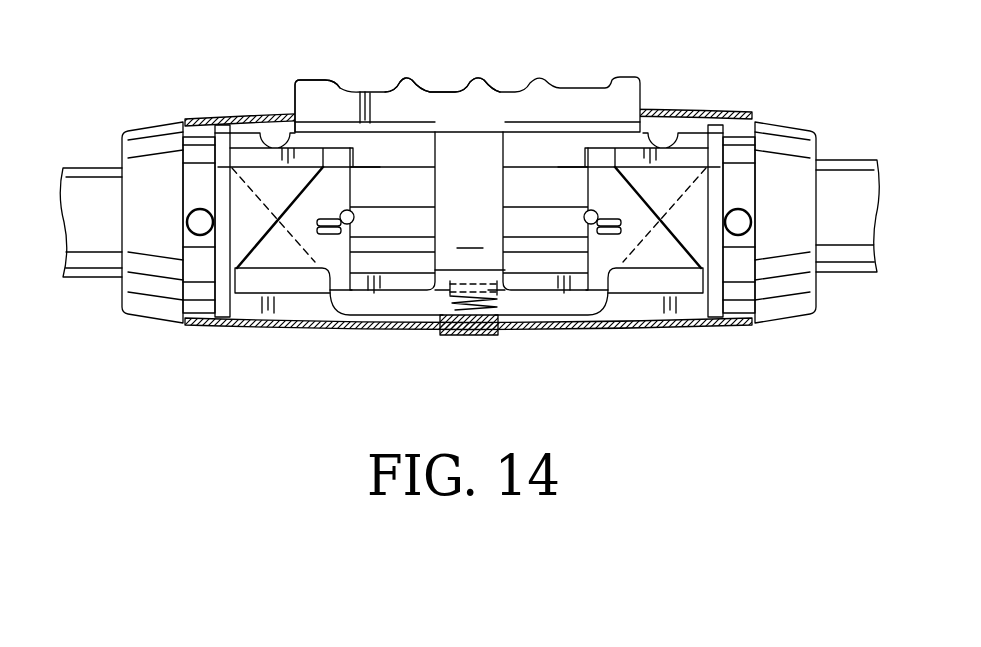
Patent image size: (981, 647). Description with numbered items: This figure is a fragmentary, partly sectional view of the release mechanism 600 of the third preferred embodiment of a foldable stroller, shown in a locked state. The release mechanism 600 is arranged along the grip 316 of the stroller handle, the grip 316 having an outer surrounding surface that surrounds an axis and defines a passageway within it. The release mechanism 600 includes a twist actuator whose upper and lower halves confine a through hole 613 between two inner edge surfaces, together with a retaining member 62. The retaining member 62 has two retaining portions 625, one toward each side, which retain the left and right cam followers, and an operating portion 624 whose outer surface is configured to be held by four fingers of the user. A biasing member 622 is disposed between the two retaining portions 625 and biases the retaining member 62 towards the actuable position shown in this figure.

The release mechanism 600 is at (679, 95).
The grip 316 is at (852, 130).
The retaining member 62 is at (507, 80).
The through hole 613 is at (312, 112).
The operating portion 624 is at (432, 90).
The retaining portions 625 is at (398, 283).
The biasing member 622 is at (468, 310).